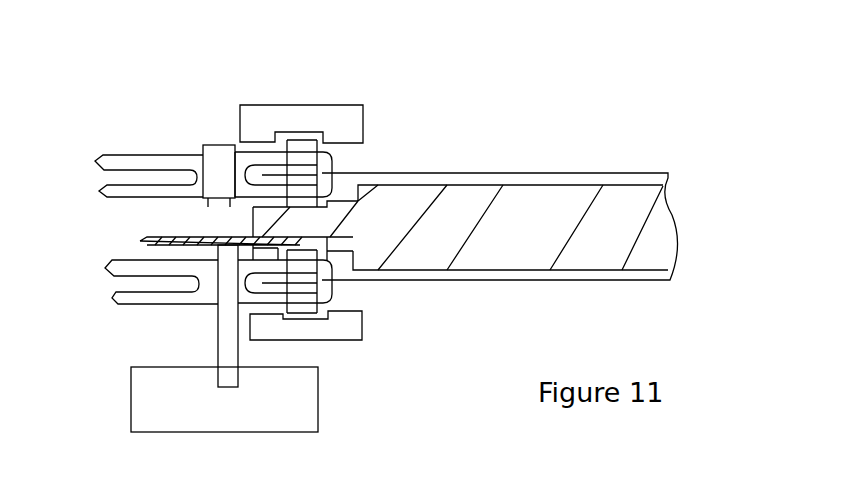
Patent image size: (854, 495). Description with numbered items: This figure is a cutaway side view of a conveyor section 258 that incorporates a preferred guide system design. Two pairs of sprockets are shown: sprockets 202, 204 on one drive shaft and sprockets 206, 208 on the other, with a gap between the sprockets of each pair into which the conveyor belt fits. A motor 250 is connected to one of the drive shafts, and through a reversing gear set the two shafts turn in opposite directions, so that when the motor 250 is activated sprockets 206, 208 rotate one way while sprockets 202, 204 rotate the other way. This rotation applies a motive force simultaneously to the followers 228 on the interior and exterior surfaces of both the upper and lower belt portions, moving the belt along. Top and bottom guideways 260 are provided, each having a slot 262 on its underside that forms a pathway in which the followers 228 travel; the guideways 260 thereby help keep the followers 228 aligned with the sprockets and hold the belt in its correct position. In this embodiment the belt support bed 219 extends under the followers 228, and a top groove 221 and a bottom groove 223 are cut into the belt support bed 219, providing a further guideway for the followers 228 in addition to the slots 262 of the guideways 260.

The conveyor section 258 is at (180, 48).
The sprocket 202 is at (106, 153).
The sprocket 204 is at (112, 195).
The sprocket 206 is at (118, 262).
The sprocket 208 is at (114, 302).
The motor 250 is at (300, 400).
The followers 228 is at (335, 166).
The slot 262 is at (310, 130).
The guideway 260 is at (297, 105).
The top groove 221 is at (342, 220).
The bottom groove 223 is at (340, 233).
The belt support bed 219 is at (630, 226).